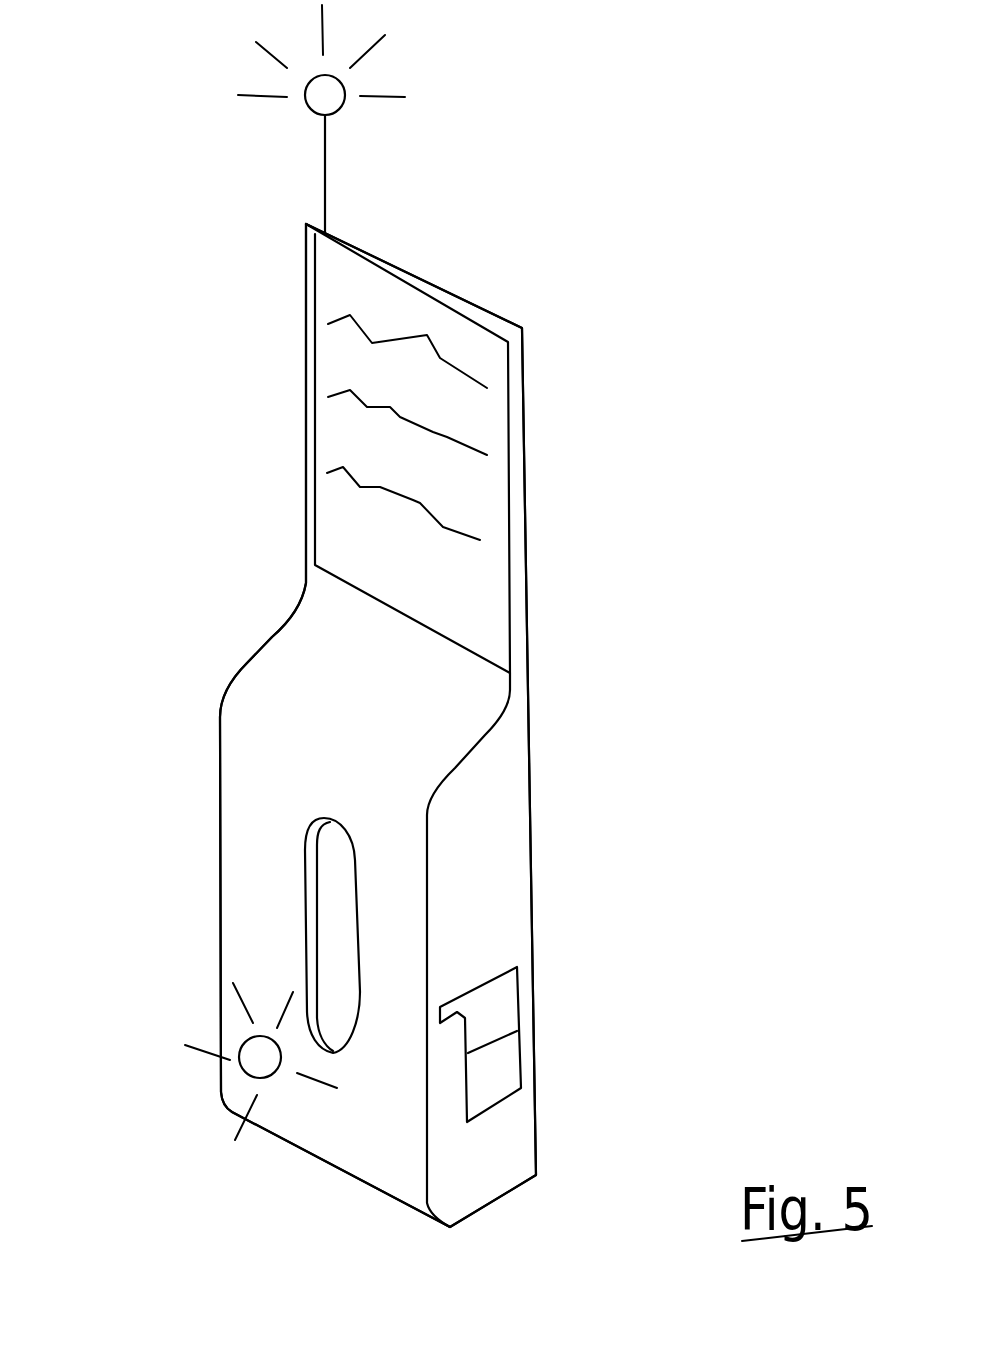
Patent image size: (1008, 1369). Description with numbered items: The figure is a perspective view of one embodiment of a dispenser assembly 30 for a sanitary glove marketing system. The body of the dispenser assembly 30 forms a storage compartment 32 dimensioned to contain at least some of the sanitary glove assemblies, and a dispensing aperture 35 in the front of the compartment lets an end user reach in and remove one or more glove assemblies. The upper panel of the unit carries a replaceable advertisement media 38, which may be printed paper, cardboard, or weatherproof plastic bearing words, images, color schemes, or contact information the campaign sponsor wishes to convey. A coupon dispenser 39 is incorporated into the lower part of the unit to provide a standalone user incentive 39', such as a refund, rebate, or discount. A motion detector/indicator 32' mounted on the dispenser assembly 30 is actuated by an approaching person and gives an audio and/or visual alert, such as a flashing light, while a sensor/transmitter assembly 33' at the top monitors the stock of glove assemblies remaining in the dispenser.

The dispenser assembly 30 is at (156, 589).
The storage compartment 32 is at (470, 725).
The motion detector/indicator 32' is at (192, 1049).
The sensor/transmitter assembly 33' is at (358, 119).
The dispensing aperture 35 is at (358, 915).
The replaceable advertisement media 38 is at (490, 358).
The coupon dispenser 39 is at (551, 1040).
The standalone user incentive 39' is at (567, 1068).